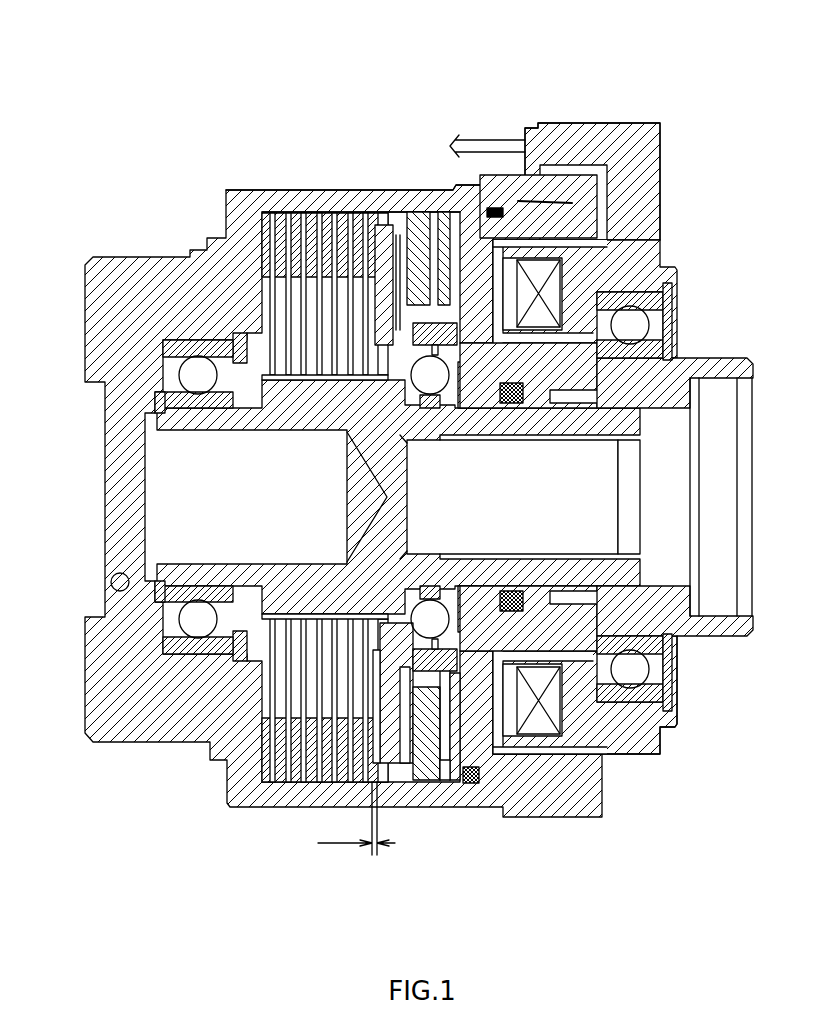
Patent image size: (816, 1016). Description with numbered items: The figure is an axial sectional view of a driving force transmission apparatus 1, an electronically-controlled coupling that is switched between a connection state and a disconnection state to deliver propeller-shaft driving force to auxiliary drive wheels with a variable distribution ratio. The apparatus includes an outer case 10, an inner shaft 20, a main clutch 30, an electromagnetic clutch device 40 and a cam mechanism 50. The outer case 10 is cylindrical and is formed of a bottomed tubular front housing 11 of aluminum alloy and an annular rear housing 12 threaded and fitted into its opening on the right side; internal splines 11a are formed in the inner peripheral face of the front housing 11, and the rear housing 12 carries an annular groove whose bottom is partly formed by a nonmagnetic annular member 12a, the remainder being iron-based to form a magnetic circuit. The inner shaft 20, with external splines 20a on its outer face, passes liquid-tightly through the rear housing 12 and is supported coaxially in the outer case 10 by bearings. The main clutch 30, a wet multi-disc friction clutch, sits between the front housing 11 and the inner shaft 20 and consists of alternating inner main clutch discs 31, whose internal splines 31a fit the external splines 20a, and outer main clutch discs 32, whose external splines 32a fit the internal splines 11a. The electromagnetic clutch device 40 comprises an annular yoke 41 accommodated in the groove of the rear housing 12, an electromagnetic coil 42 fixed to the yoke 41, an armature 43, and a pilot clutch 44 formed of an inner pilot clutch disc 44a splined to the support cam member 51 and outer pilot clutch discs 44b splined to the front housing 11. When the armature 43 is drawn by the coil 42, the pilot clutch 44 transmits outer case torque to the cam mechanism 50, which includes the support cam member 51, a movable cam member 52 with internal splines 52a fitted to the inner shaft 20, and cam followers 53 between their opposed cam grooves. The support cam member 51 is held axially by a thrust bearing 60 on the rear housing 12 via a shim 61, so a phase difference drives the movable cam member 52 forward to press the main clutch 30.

The driving force transmission apparatus 1 is at (680, 97).
The outer case 10 is at (137, 247).
The front housing 11 is at (190, 250).
The internal splines 11a is at (370, 210).
The rear housing 12 is at (585, 183).
The annular member 12a is at (460, 275).
The inner shaft 20 is at (200, 425).
The external splines 20a is at (265, 337).
The main clutch 30 is at (198, 123).
The inner main clutch discs 31 is at (267, 287).
The internal splines 31a is at (307, 410).
The outer main clutch discs 32 is at (293, 220).
The external splines 32a is at (328, 213).
The electromagnetic clutch device 40 is at (633, 777).
The yoke 41 is at (637, 747).
The electromagnetic coil 42 is at (560, 715).
The armature 43 is at (422, 785).
The pilot clutch 44 is at (550, 897).
The inner pilot clutch disc 44a is at (447, 800).
The outer pilot clutch discs 44b is at (500, 805).
The cam mechanism 50 is at (478, 62).
The support cam member 51 is at (466, 403).
The movable cam member 52 is at (380, 212).
The internal splines 52a is at (387, 497).
The cam followers 53 is at (388, 238).
The thrust bearing 60 is at (480, 385).
The shim 61 is at (460, 403).